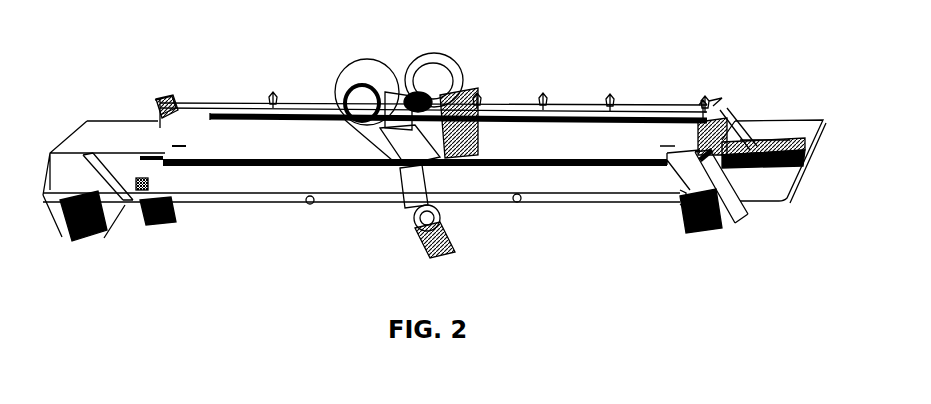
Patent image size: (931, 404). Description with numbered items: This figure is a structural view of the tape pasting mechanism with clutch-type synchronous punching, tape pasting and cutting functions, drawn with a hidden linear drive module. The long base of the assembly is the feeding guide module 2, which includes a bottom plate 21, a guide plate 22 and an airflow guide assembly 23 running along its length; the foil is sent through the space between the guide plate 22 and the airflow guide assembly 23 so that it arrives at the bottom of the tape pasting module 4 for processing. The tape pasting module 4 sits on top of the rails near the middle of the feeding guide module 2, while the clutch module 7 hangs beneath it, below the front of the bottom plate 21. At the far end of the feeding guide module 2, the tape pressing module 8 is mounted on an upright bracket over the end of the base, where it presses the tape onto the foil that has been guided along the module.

The feeding guide module 2 is at (165, 78).
The bottom plate 21 is at (237, 142).
The guide plate 22 is at (243, 112).
The airflow guide assembly 23 is at (273, 100).
The tape pasting module 4 is at (380, 73).
The clutch module 7 is at (458, 228).
The tape pressing module 8 is at (778, 138).